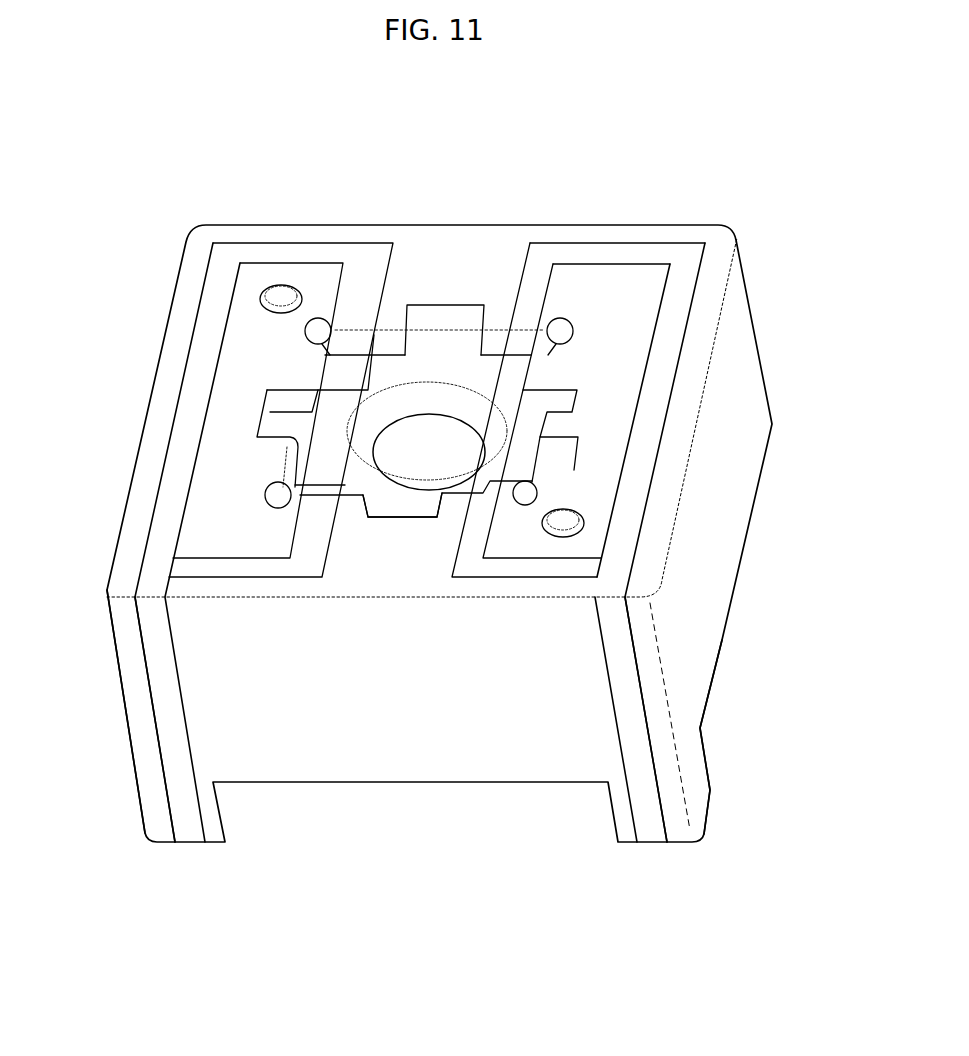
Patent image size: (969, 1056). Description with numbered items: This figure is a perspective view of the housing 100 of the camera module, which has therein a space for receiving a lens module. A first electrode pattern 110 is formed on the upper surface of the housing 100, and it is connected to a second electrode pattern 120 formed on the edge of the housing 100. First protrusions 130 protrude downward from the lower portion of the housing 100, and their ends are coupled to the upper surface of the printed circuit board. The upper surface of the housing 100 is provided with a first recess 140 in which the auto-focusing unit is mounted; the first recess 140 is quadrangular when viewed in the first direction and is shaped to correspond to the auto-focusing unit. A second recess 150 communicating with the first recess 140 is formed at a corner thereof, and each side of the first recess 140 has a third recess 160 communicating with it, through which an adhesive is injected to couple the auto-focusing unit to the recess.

The housing 100 is at (226, 215).
The first electrode pattern 110 is at (170, 505).
The second electrode pattern 120 is at (195, 828).
The first protrusions 130 is at (218, 835).
The first recess 140 is at (326, 418).
The second recess 150 is at (327, 347).
The third recess 160 is at (442, 342).